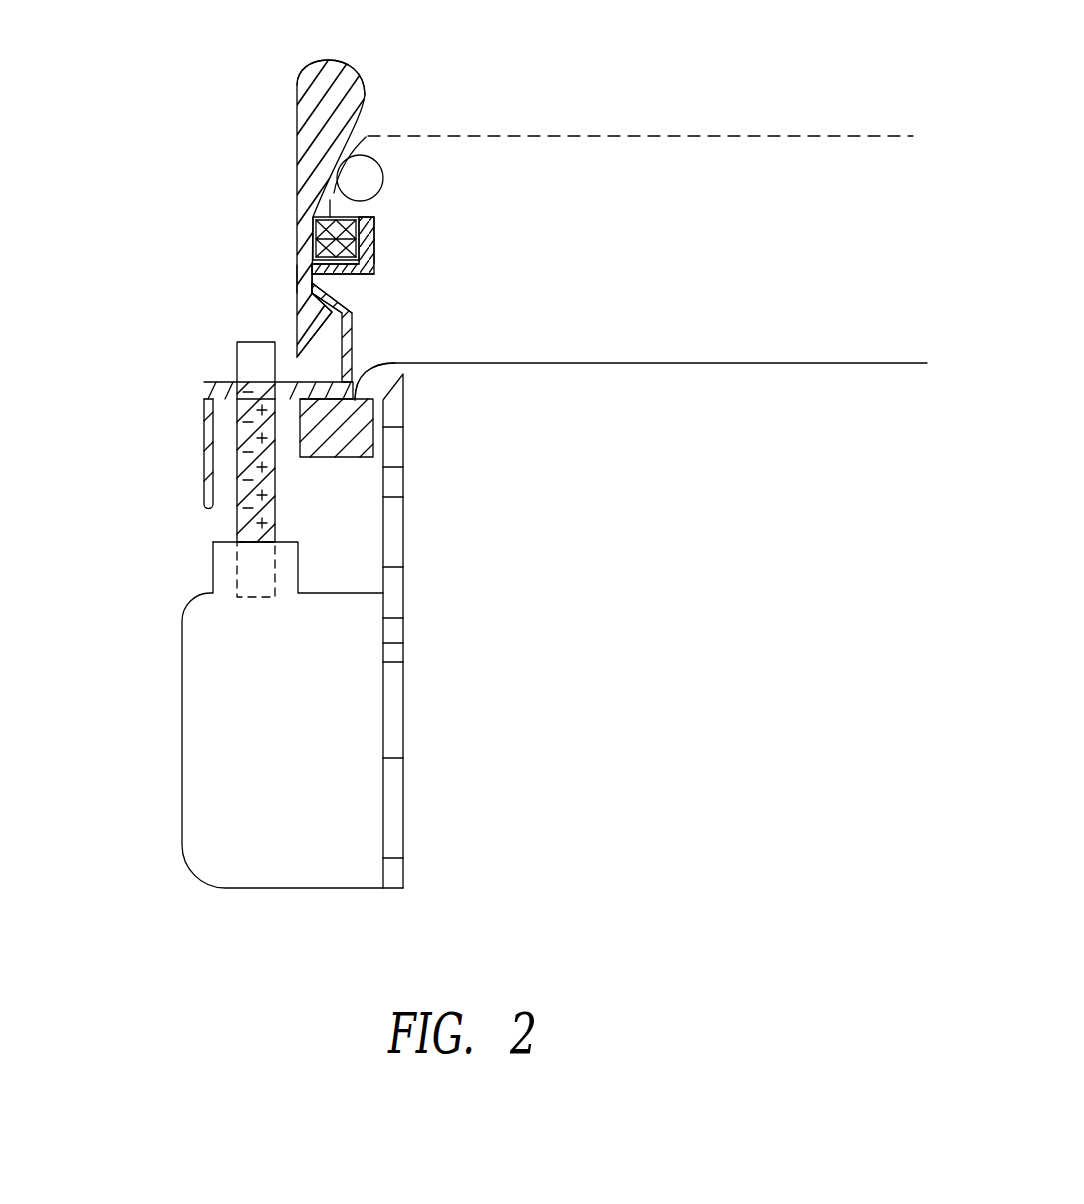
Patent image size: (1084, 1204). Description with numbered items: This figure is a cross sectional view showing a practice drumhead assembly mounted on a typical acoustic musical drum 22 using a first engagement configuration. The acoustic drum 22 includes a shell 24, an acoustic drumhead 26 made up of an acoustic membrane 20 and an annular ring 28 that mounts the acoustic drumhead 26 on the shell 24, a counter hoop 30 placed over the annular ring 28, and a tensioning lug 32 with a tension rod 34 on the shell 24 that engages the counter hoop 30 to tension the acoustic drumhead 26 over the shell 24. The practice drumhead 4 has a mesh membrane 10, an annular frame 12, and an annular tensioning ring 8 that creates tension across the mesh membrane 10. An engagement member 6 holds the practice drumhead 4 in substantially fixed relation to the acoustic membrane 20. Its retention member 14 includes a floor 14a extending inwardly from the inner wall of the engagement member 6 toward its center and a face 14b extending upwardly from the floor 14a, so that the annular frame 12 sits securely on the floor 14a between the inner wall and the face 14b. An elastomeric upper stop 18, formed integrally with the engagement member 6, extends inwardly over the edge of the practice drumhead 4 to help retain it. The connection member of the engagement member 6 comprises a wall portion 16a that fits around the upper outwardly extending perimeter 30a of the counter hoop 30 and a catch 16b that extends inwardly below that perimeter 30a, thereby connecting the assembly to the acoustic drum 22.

The practice drumhead 4 is at (428, 114).
The engagement member 6 is at (306, 125).
The annular tensioning ring 8 is at (383, 178).
The mesh membrane 10 is at (587, 136).
The annular frame 12 is at (300, 233).
The retention member 14 is at (398, 224).
The floor 14a is at (350, 274).
The face 14b is at (377, 240).
The wall portion 16a is at (290, 278).
The catch 16b is at (306, 318).
The upper stop 18 is at (318, 82).
The acoustic membrane 20 is at (678, 363).
The acoustic musical drum 22 is at (153, 792).
The shell 24 is at (395, 806).
The acoustic drumhead 26 is at (438, 390).
The annular ring 28 is at (354, 438).
The counter hoop 30 is at (355, 336).
The upper outwardly extending perimeter 30a is at (340, 288).
The tensioning lugs 32 is at (207, 678).
The tension rods 34 is at (245, 470).